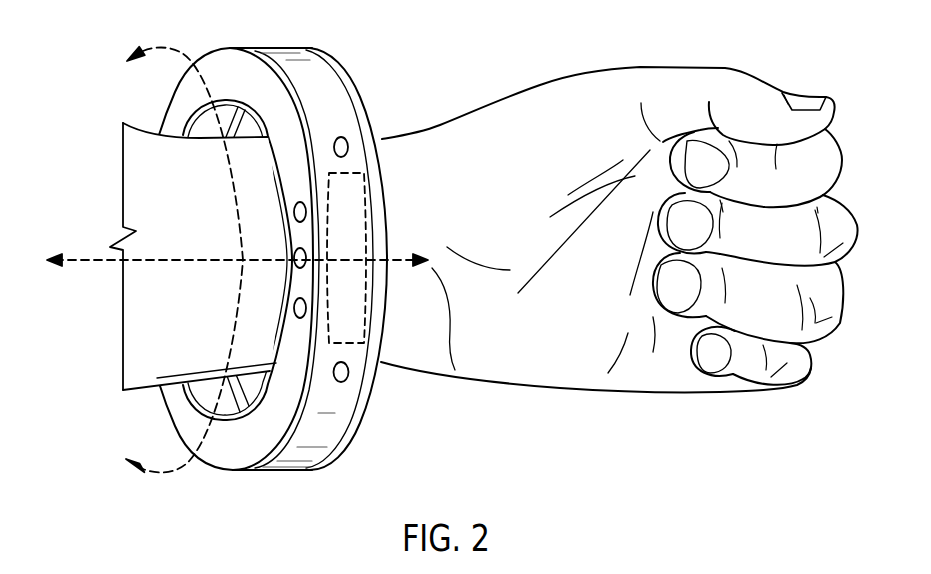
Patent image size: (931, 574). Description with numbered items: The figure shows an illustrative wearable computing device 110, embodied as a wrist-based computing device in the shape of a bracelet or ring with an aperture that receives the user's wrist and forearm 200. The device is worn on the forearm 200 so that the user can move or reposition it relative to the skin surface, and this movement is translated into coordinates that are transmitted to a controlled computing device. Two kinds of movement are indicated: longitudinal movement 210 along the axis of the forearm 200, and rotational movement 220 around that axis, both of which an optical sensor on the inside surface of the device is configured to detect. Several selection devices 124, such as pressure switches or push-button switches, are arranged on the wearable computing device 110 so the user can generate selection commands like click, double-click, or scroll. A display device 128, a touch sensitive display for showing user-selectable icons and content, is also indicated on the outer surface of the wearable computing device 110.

The wearable computing device 110 is at (346, 85).
The selection devices 124 is at (347, 141).
The display device 128 is at (350, 347).
The forearm 200 is at (123, 390).
The longitudinal movement 210 is at (170, 261).
The rotational movement 220 is at (168, 470).